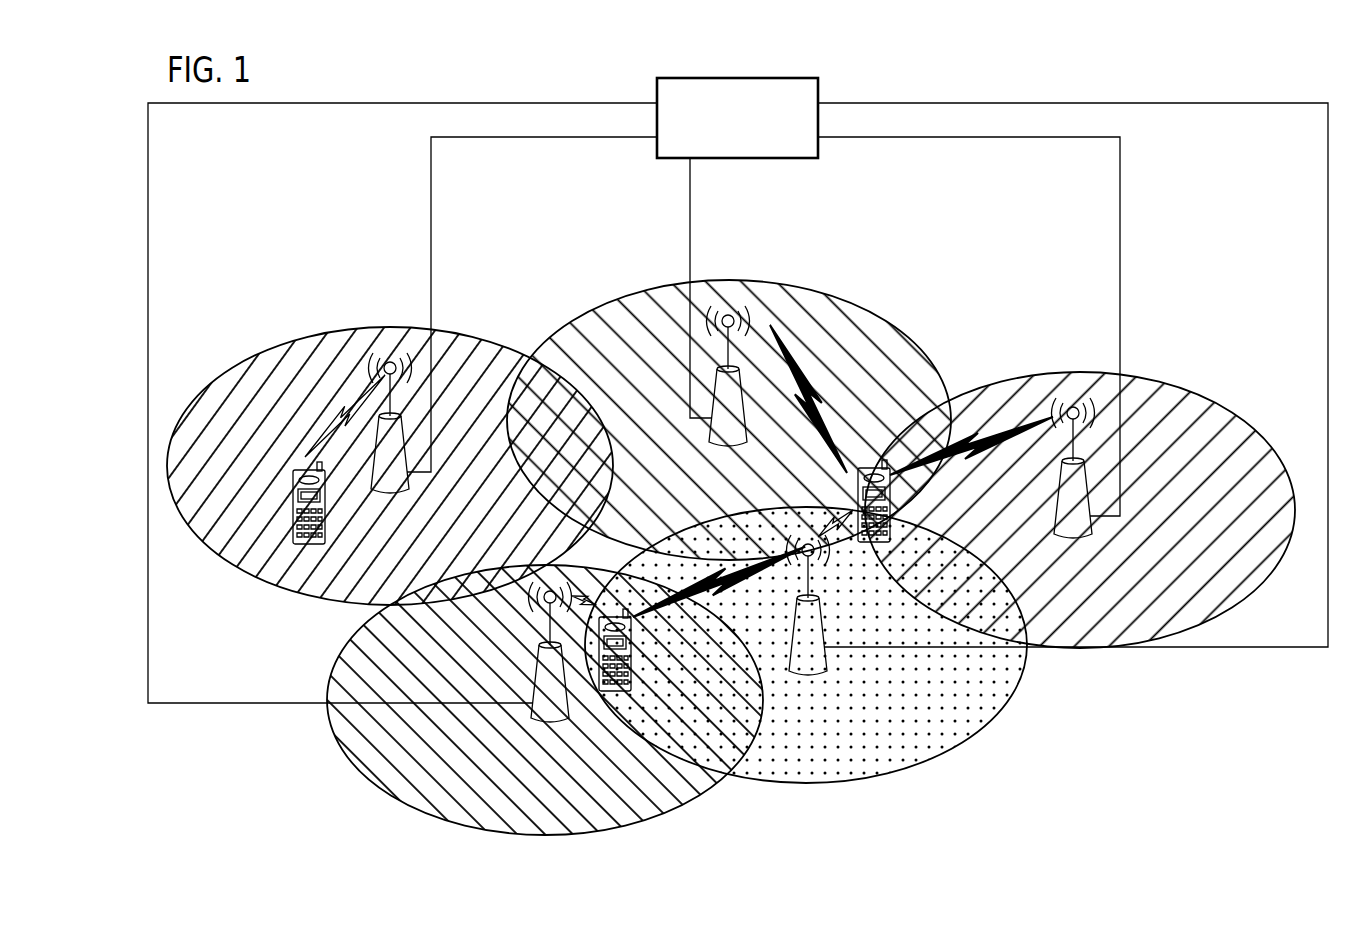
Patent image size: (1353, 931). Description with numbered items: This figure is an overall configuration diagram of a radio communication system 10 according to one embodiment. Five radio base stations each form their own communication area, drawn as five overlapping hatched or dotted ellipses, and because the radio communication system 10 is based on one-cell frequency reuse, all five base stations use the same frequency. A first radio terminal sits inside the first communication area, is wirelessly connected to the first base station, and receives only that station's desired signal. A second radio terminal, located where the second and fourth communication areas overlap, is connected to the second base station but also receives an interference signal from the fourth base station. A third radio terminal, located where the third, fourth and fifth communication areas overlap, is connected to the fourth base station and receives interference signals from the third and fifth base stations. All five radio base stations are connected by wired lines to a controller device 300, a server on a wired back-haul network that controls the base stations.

The radio communication system 10 is at (1052, 78).
The controller device 300 is at (769, 78).